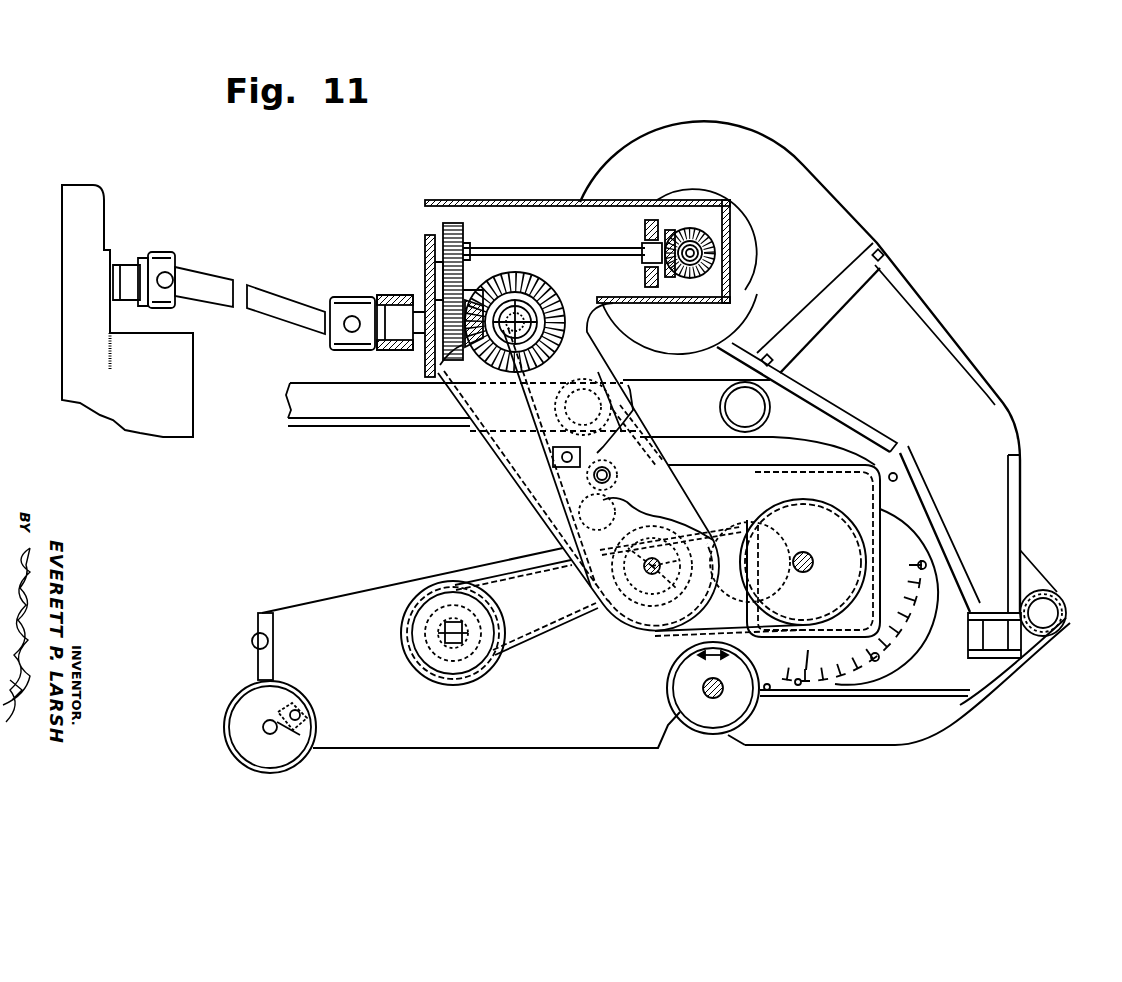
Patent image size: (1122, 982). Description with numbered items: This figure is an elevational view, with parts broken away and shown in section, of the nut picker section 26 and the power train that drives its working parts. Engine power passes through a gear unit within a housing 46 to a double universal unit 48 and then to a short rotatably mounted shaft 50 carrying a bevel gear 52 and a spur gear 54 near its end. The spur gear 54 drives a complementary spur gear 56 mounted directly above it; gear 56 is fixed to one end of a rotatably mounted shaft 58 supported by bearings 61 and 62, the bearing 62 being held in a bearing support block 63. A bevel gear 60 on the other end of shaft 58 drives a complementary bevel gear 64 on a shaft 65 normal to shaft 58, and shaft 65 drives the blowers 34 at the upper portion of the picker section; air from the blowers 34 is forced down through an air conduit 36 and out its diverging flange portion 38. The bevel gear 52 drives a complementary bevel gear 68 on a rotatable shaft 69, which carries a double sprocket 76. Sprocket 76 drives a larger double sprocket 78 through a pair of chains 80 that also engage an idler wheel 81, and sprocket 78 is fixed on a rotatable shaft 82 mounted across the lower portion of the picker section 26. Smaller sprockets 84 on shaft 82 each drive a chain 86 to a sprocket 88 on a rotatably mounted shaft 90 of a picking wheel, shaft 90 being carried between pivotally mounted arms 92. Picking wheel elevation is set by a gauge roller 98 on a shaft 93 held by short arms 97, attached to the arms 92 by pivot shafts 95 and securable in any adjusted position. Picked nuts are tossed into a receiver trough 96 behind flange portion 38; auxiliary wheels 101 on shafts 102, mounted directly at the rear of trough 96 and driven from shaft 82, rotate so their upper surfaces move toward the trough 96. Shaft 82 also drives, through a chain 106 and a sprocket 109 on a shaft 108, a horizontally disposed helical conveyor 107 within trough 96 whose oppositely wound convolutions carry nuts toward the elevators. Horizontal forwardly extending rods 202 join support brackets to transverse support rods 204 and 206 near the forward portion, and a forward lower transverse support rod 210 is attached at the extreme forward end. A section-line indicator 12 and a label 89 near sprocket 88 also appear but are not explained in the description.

The section line 12- 12 is at (510, 190).
The nut picker section 26 is at (838, 195).
The blower 34 is at (738, 225).
The air conduit 36 is at (943, 362).
The diverging flange portion 38 is at (1000, 557).
The housing 46 is at (78, 323).
The double universal unit 48 is at (160, 254).
The short rotatably mounted shaft 50 is at (397, 313).
The bevel gear 52 is at (477, 290).
The spur gear 54 is at (452, 358).
The complementary spur gear 56 is at (452, 225).
The rotatably mounted shaft 58 is at (578, 252).
The bevel gear 60 is at (673, 255).
The bearing 61 is at (436, 268).
The bearing 62 is at (652, 220).
The bearing support block 63 is at (648, 278).
The complementary bevel gear 64 is at (685, 274).
The shaft 65 is at (698, 256).
The complementary bevel gear 68 is at (547, 306).
The rotatable shaft 69 is at (528, 303).
The double sprocket 76 is at (510, 340).
The larger double sprocket 78 is at (640, 613).
The chains 80 is at (552, 445).
The idler wheel 81 is at (583, 508).
The rotatable shaft 82 is at (645, 570).
The smaller sprocket 84 is at (675, 556).
The chain 86 is at (552, 640).
The sprocket 88 is at (440, 657).
The pulley rim 89 is at (428, 633).
The rotatably mounted shaft 90 is at (468, 630).
The pivotally mounted arms 92 is at (297, 612).
The shaft 93 is at (263, 727).
The pivot shaft 95 is at (290, 712).
The receiver trough 96 is at (808, 650).
The short arms 97 is at (293, 732).
The gauge roller 98 is at (248, 705).
The auxiliary wheels 101 is at (733, 708).
The shafts 102 is at (703, 687).
The chain 106 is at (748, 578).
The helical conveyor 107 is at (868, 675).
The shaft 108 is at (805, 571).
The sprocket 109 is at (790, 508).
The horizontal forwardly extending rods 202 is at (333, 390).
The transverse support rod 204 is at (610, 396).
The transverse support rod 206 is at (768, 417).
The forward lower horizontal transverse support rod 210 is at (1066, 615).